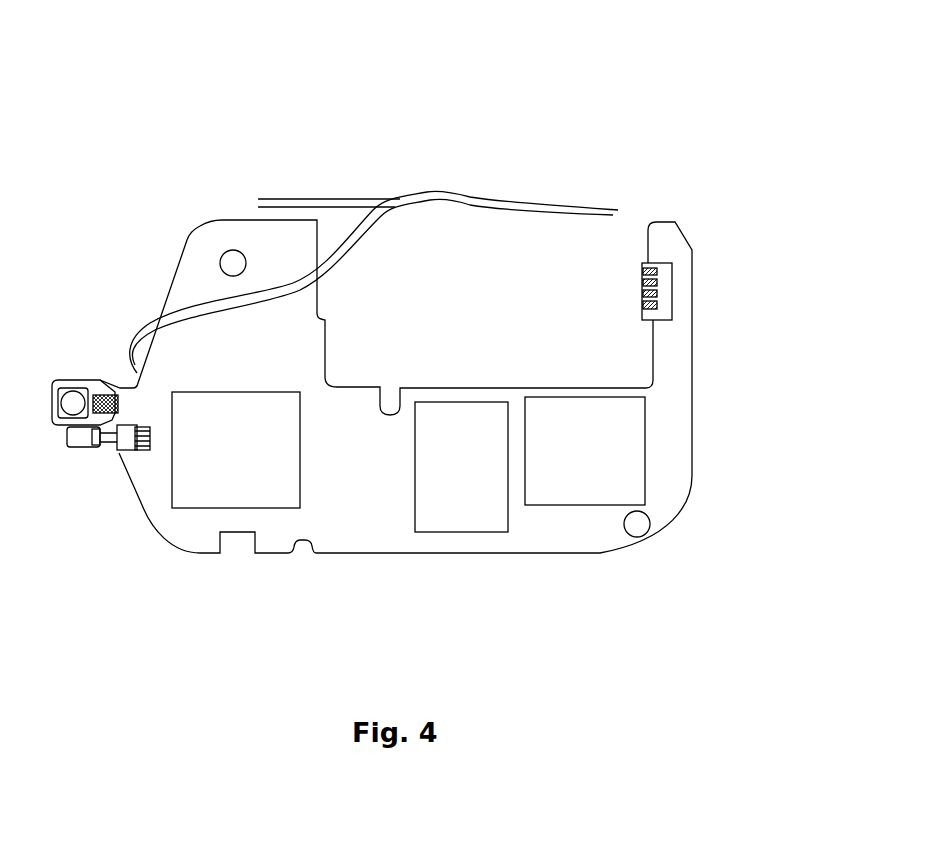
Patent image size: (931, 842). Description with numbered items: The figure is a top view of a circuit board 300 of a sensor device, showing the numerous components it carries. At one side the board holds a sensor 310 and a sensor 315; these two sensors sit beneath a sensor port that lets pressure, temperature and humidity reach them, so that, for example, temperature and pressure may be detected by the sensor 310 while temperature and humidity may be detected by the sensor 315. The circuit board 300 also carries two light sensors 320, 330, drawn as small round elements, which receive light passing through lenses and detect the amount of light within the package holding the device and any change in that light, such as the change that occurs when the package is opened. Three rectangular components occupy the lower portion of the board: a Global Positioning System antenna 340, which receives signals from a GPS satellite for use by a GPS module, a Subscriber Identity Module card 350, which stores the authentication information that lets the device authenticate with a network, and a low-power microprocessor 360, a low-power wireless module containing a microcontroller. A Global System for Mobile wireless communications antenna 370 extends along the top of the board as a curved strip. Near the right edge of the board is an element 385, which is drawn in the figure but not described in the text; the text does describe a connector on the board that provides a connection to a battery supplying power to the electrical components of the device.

The circuit board 300 is at (803, 46).
The sensor 310 is at (70, 398).
The sensor 315 is at (90, 448).
The light sensor 320 is at (232, 258).
The light sensor 330 is at (633, 537).
The Global Positioning System (GPS) antenna 340 is at (200, 512).
The Subscriber Identity Module (SIM) card 350 is at (463, 498).
The low-power microprocessor 360 is at (618, 460).
The Global System for Mobile (GSM) wireless communications antenna 370 is at (522, 203).
The connector 385 is at (675, 263).